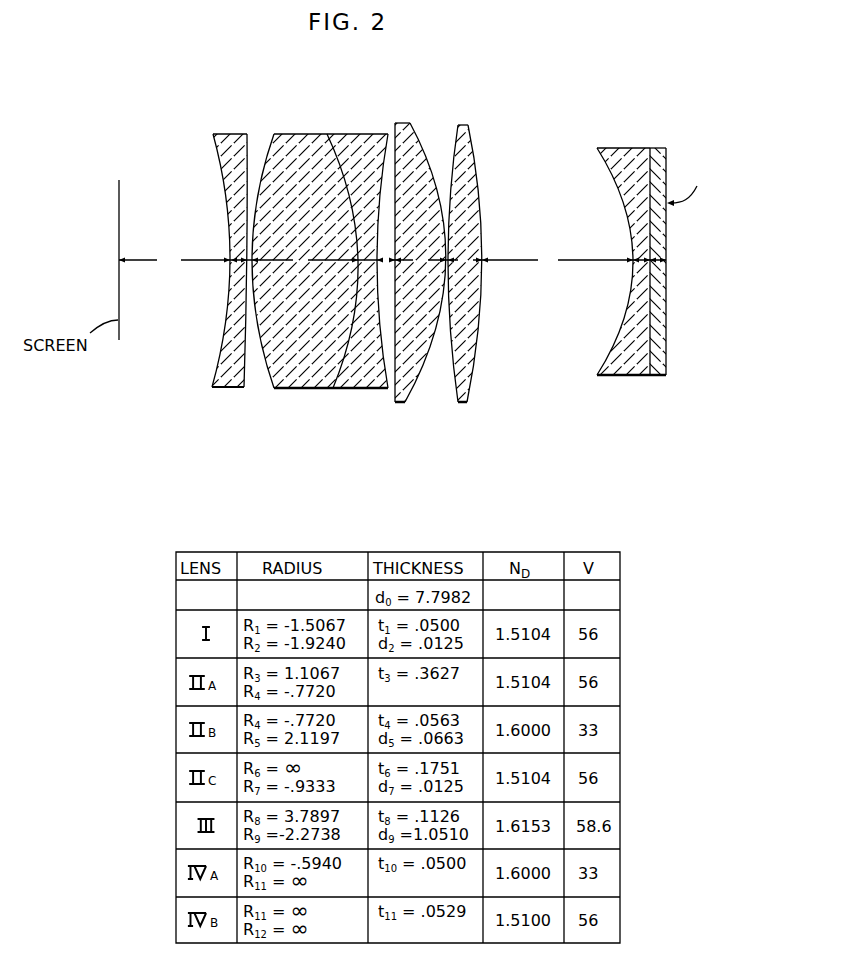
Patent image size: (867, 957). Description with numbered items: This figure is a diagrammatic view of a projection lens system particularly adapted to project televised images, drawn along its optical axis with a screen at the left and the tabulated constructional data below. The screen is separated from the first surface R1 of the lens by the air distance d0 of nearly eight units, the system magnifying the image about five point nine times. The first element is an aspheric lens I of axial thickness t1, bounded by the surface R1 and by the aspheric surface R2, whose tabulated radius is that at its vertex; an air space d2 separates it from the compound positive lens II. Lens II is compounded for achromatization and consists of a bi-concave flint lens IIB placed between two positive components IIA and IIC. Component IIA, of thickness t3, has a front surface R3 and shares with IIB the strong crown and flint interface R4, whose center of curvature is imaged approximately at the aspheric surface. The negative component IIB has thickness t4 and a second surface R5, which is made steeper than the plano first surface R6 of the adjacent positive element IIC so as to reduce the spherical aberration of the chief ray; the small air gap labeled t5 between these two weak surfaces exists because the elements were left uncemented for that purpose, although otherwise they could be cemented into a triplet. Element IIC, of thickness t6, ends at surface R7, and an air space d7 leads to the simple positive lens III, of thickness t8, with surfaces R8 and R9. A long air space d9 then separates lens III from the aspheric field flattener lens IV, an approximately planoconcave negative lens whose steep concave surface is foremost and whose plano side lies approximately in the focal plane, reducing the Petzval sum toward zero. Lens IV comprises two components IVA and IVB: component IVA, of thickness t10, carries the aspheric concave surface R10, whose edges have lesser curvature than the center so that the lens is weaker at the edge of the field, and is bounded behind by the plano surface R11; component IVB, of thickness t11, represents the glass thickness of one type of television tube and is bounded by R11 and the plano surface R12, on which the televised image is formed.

The aspheric lens I is at (216, 242).
The compound positive lens II is at (417, 110).
The positive component IIA is at (305, 311).
The bi-concave flint lens IIB is at (356, 311).
The positive element IIC is at (415, 306).
The simple positive lens III is at (476, 259).
The field flattener lens IV is at (687, 125).
The field flattener component IVA is at (607, 302).
The field flattener component IVB is at (682, 302).
The first surface of lens I R1 is at (218, 357).
The aspheric surface of lens I R2 is at (245, 358).
The first surface of component IIA R3 is at (270, 378).
The crown and flint interface R4 is at (335, 380).
The second surface of component IIB R5 is at (364, 380).
The first surface of element IIC R6 is at (395, 393).
The second surface of element IIC R7 is at (418, 392).
The first surface of lens III R8 is at (455, 393).
The second surface of lens III R9 is at (488, 263).
The aspheric concave surface R10 is at (612, 352).
The plano surface between IVA and IVB R11 is at (648, 367).
The image surface of component IVB R12 is at (667, 358).
The thickness of lens I t1 is at (234, 263).
The thickness of component IIA t3 is at (299, 261).
The thickness of component IIB t4 is at (364, 263).
The axial air space between IIB and IIC t5 is at (385, 261).
The thickness of element IIC t6 is at (420, 261).
The thickness of lens III t8 is at (465, 261).
The thickness of component IVA t10 is at (640, 264).
The thickness of component IVB t11 is at (656, 257).
The distance from screen to lens I d0 is at (167, 261).
The air space after lens I d2 is at (251, 168).
The air space after element IIC d7 is at (446, 197).
The air space after lens III d9 is at (546, 261).